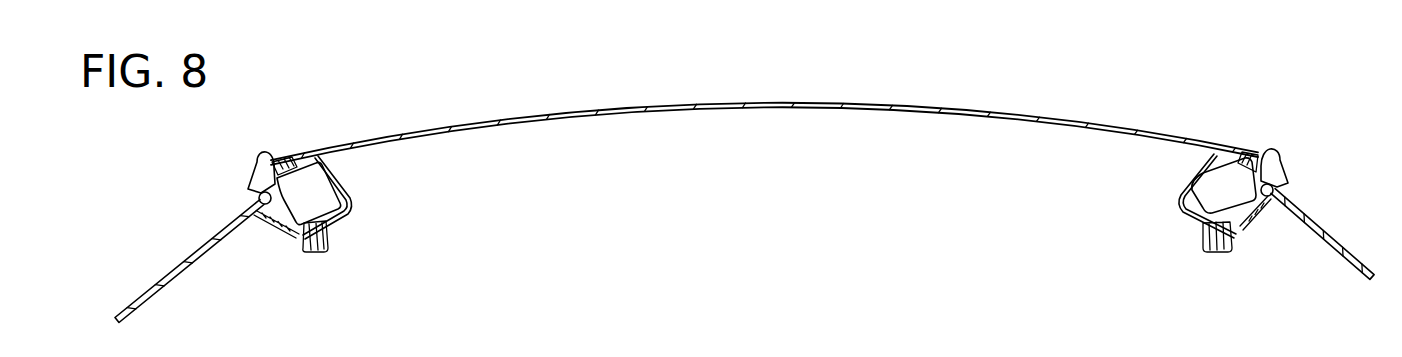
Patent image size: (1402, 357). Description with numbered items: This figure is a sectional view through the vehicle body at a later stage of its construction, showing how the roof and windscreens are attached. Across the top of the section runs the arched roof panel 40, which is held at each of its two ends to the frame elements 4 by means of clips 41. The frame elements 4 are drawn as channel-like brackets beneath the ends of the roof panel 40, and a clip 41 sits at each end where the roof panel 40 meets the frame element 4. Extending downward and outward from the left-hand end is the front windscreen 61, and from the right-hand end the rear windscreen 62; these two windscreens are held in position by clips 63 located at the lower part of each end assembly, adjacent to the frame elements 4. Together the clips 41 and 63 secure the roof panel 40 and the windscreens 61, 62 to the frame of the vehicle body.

The frame element 4 is at (331, 181).
The roof panel 40 is at (710, 107).
The clip 41 is at (254, 172).
The front windscreen 61 is at (193, 250).
The rear windscreen 62 is at (1318, 227).
The clip 63 is at (277, 210).